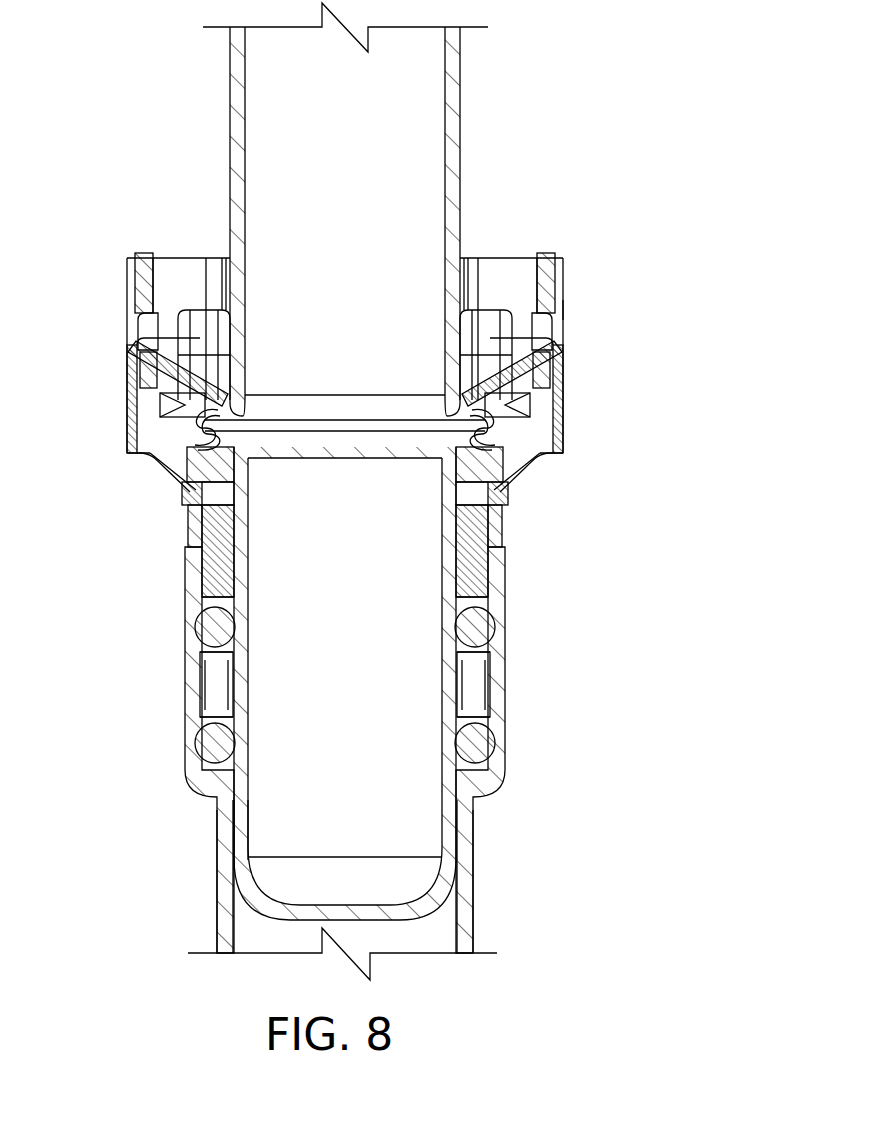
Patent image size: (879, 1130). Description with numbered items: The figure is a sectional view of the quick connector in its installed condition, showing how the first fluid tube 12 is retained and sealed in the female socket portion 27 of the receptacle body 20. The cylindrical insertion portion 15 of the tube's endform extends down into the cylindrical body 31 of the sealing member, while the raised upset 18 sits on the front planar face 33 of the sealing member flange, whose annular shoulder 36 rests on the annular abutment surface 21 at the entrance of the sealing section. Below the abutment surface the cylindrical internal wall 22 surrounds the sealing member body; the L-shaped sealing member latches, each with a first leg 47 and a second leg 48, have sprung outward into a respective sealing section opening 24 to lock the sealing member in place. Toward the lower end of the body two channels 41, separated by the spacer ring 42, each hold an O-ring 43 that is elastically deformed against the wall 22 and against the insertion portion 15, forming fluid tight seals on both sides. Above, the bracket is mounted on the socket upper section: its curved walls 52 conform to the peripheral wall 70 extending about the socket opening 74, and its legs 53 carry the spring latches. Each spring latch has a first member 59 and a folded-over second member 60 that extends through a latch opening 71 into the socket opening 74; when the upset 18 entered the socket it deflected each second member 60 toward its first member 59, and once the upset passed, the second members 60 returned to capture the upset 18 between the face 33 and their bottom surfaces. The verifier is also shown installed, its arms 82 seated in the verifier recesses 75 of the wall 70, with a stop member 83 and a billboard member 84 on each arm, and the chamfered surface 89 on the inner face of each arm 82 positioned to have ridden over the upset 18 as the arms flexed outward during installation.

The first fluid tube 12 is at (230, 62).
The cylindrical insertion portion 15 is at (235, 828).
The raised upset 18 is at (497, 470).
The receptacle body 20 is at (222, 893).
The annular abutment surface 21 is at (178, 478).
The cylindrical internal wall 22 is at (190, 600).
The sealing section opening 24 is at (500, 565).
The female socket portion 27 is at (594, 310).
The cylindrical body 31 is at (485, 593).
The front planar face 33 is at (520, 460).
The annular shoulder 36 is at (175, 465).
The channel 41 is at (215, 654).
The spacer ring 42 is at (483, 672).
The O-ring 43 is at (483, 628).
The first leg 47 is at (498, 540).
The second leg 48 is at (500, 515).
The curved wall 52 is at (128, 260).
The leg 53 is at (565, 438).
The first member 59 is at (565, 365).
The second member 60 is at (142, 370).
The peripheral wall 70 is at (147, 297).
The latch opening 71 is at (152, 333).
The socket opening 74 is at (207, 262).
The verifier recess 75 is at (495, 300).
The arm 82 is at (175, 418).
The stop member 83 is at (507, 310).
The billboard member 84 is at (194, 318).
The chamfered surface 89 is at (190, 398).